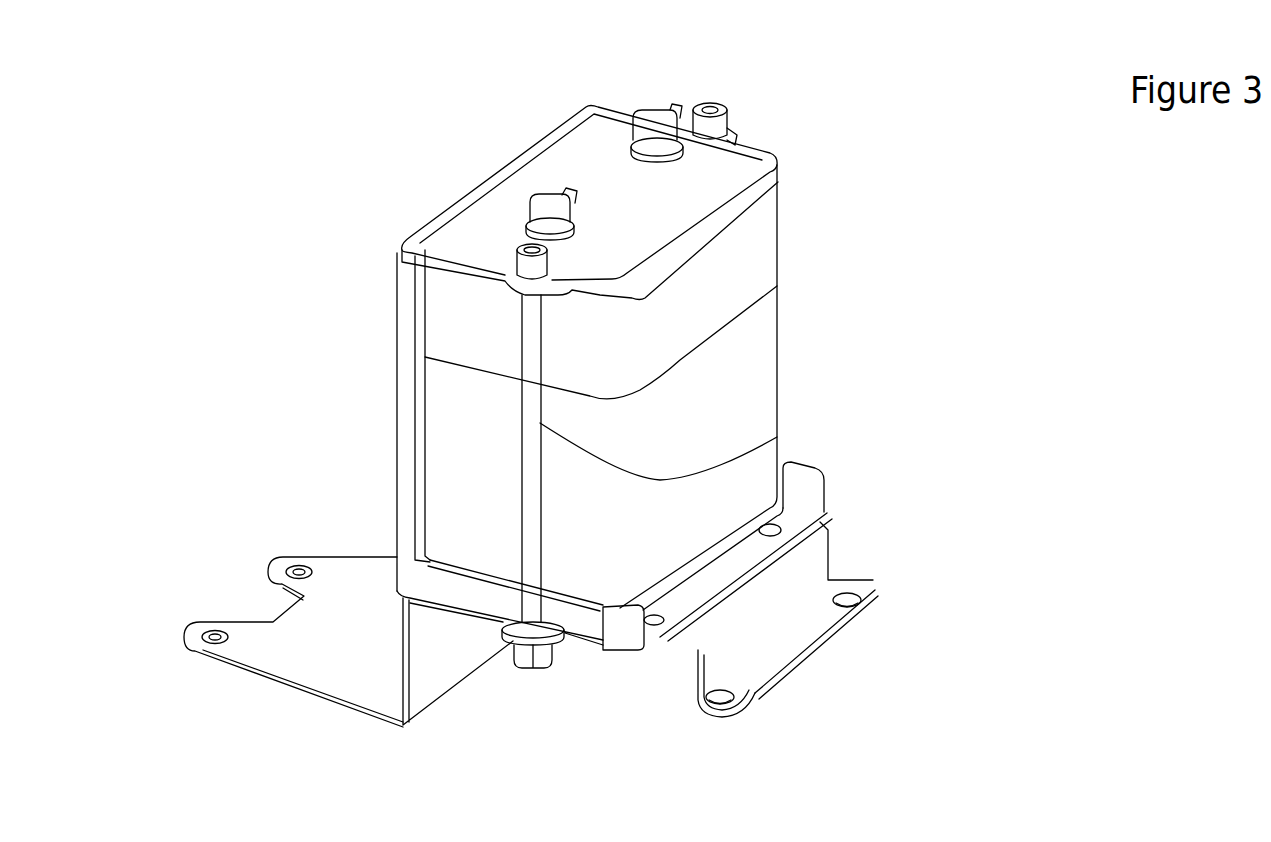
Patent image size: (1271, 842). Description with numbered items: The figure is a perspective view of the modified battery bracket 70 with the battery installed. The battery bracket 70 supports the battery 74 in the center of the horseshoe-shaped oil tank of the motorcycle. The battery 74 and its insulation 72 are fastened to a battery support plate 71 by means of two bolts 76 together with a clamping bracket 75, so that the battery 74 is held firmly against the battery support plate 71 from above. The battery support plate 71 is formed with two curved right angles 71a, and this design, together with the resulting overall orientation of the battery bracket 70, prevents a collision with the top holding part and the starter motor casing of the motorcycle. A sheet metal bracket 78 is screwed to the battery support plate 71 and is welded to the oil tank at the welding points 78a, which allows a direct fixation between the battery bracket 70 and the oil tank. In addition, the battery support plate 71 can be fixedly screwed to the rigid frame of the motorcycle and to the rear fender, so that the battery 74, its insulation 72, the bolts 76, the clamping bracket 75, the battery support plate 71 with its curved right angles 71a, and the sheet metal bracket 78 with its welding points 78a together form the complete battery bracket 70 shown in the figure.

The battery bracket 70 is at (252, 137).
The battery support plate 71 is at (363, 585).
The curved right angles 71a is at (415, 606).
The insulation 72 is at (405, 358).
The battery 74 is at (487, 235).
The clamping bracket 75 is at (768, 148).
The bolts 76 is at (779, 437).
The sheet metal bracket 78 is at (717, 582).
The welding points 78a is at (627, 637).